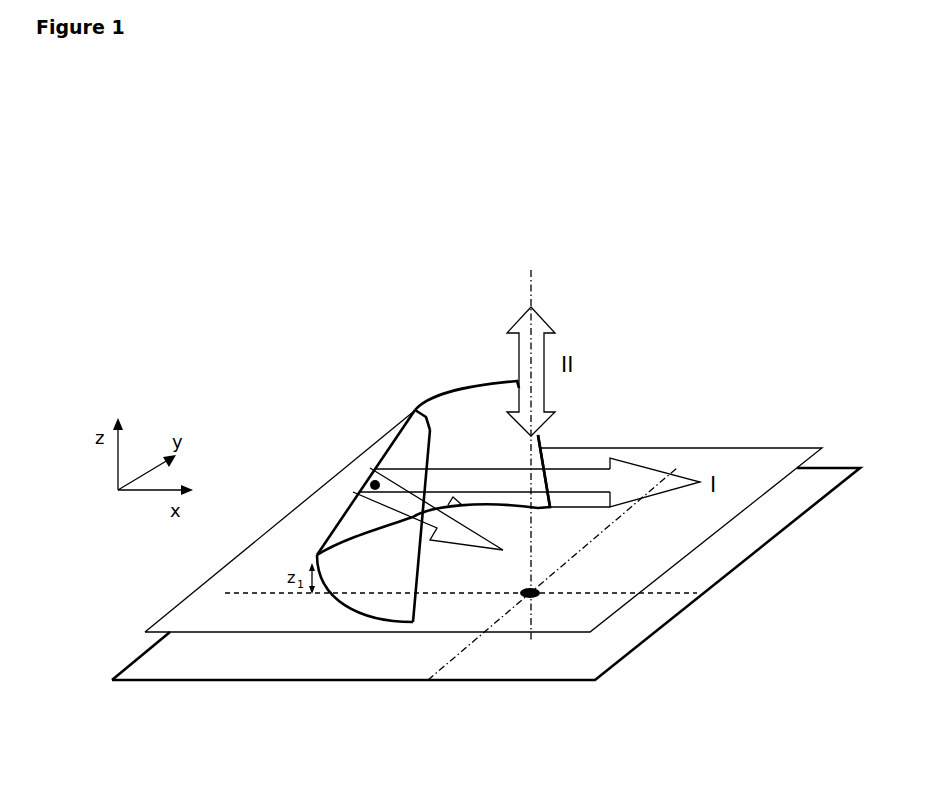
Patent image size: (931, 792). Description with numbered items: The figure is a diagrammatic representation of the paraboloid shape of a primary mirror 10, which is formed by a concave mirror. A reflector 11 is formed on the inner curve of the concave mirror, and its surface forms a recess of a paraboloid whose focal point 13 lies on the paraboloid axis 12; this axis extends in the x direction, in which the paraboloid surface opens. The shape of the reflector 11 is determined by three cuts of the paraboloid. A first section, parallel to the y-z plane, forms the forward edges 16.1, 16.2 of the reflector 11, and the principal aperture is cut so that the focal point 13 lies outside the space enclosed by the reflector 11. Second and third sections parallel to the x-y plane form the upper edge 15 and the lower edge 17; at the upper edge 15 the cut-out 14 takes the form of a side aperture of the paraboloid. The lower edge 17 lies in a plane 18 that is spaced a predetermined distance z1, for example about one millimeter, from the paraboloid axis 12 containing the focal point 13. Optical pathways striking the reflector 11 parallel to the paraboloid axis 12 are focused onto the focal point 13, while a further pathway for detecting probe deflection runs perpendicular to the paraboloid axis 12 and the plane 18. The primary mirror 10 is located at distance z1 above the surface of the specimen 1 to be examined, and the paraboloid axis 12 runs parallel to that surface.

The specimen 1 is at (282, 668).
The primary mirror 10 is at (388, 389).
The reflector 11 is at (372, 484).
The paraboloid axis 12 is at (615, 592).
The focal point 13 is at (543, 592).
The cut-out 14 is at (441, 362).
The upper edge 15 is at (410, 420).
The forward edge 16.1 is at (413, 587).
The forward edge 16.2 is at (543, 440).
The lower edge 17 is at (333, 530).
The plane 18 is at (703, 448).